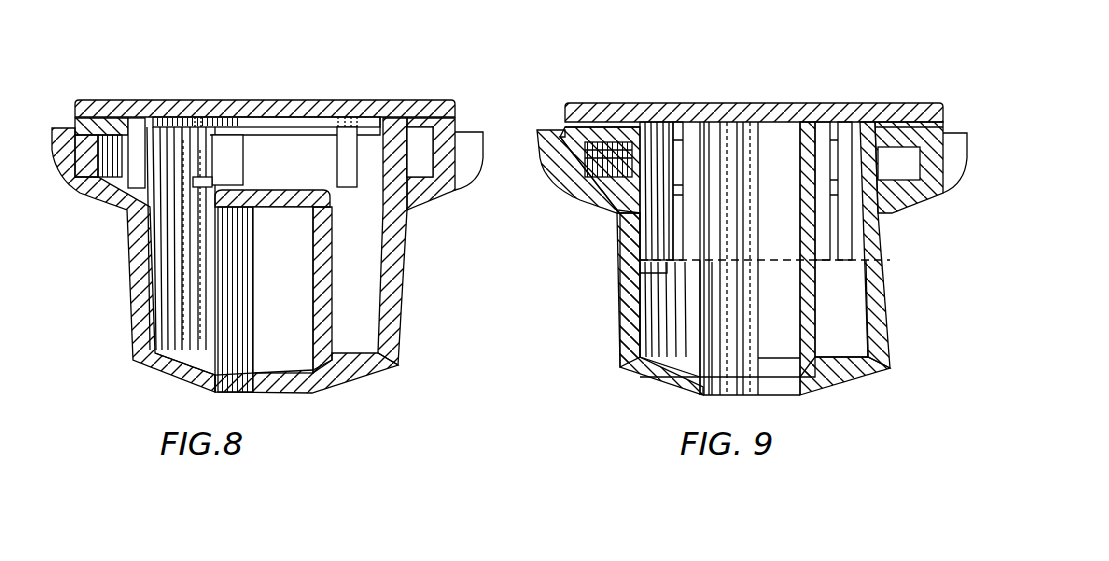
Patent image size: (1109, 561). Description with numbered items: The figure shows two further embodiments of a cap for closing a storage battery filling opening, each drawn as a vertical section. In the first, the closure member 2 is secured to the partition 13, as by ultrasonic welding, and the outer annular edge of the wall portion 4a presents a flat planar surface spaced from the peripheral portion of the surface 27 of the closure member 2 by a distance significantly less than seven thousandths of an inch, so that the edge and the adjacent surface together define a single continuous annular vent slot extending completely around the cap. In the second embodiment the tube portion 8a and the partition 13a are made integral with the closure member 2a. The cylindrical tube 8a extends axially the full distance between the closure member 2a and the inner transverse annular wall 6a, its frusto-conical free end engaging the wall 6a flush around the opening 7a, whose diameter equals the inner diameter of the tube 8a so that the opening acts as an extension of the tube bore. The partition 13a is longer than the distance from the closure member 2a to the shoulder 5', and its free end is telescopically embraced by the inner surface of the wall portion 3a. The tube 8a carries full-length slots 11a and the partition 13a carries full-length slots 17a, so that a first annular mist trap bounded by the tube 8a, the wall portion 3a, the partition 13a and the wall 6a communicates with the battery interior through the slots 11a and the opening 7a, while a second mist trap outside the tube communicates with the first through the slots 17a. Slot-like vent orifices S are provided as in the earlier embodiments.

In FIG. 8, the closure member 2 is at (290, 98).
In FIG. 8, the wall portion 4a is at (55, 127).
In FIG. 8, the surface 27 is at (122, 122).
In FIG. 8, the partition 13 is at (396, 162).
In FIG. 9, the closure member 2a is at (737, 106).
In FIG. 9, the shoulder 5' is at (617, 262).
In FIG. 9, the wall portion 3a is at (620, 300).
In FIG. 9, the slots 17a is at (676, 135).
In FIG. 9, the slots 11a is at (700, 310).
In FIG. 9, the partition 13a is at (637, 270).
In FIG. 9, the opening 7a is at (733, 388).
In FIG. 9, the cylindrical tube 8a is at (816, 340).
In FIG. 9, the inner transverse annular wall 6a is at (835, 387).
In FIG. 9, the vent orifices S is at (899, 153).